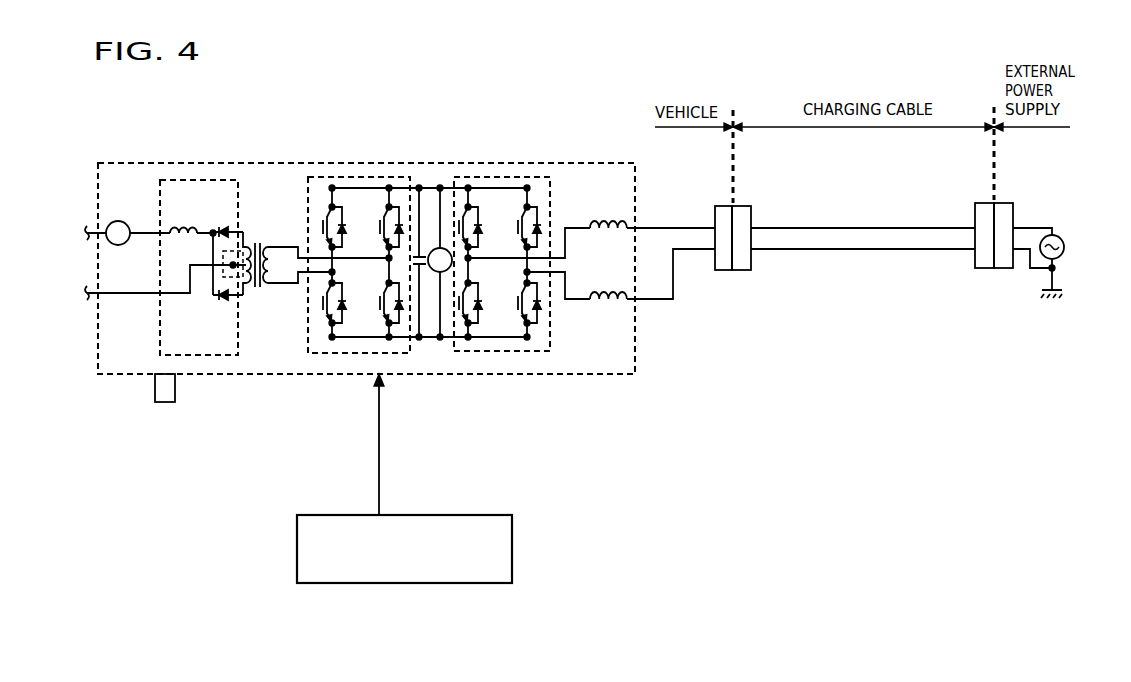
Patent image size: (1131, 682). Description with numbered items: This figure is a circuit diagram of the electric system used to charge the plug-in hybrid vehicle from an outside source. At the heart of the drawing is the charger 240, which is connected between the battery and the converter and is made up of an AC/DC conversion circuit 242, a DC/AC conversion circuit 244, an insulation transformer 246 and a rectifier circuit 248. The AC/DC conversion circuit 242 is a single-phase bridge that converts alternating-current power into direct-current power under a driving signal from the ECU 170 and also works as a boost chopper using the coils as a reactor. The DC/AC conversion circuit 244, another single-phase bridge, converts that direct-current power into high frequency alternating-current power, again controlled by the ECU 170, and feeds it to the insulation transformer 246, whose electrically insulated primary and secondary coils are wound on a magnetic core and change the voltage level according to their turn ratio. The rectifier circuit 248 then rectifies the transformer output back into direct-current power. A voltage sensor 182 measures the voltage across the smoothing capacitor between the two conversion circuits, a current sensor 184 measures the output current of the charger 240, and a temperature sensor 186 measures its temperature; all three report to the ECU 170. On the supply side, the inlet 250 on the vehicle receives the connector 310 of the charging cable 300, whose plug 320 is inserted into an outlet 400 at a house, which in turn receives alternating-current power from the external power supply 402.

The ECU 170 is at (481, 583).
The voltage sensor 182 is at (440, 272).
The current sensor 184 is at (118, 221).
The temperature sensor 186 is at (163, 402).
The charger 240 is at (313, 378).
The AC/DC conversion circuit 242 is at (493, 351).
The DC/AC conversion circuit 244 is at (401, 353).
The insulation transformer 246 is at (268, 303).
The rectifier circuit 248 is at (200, 355).
The inlet 250 is at (724, 206).
The charging cable 300 is at (859, 194).
The connector 310 is at (741, 206).
The plug 320 is at (988, 203).
The outlet 400 is at (1000, 268).
The external power supply 402 is at (1052, 235).